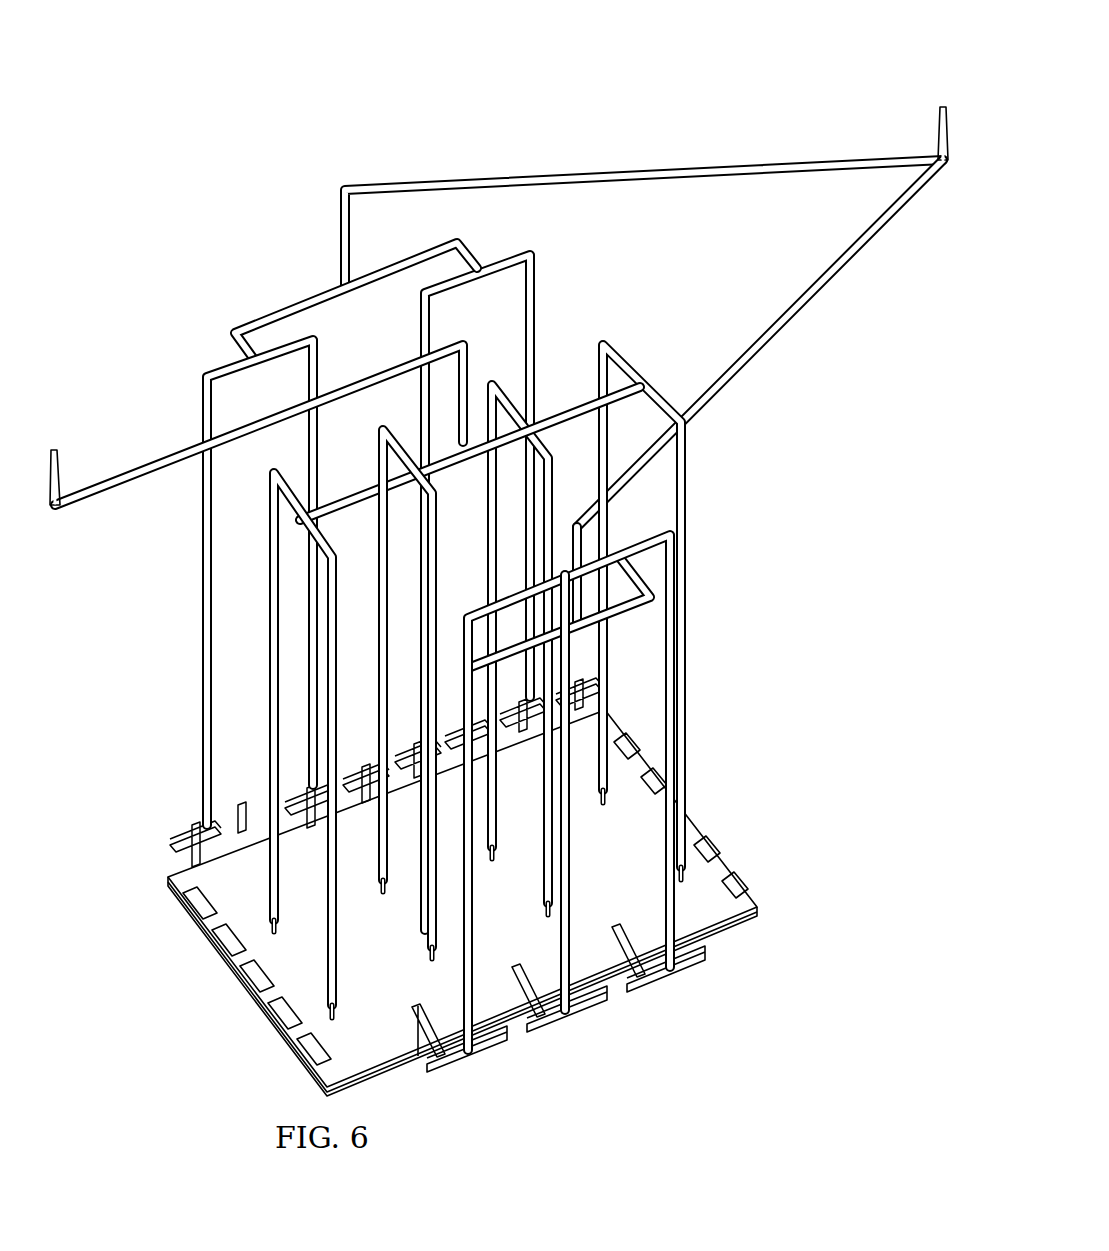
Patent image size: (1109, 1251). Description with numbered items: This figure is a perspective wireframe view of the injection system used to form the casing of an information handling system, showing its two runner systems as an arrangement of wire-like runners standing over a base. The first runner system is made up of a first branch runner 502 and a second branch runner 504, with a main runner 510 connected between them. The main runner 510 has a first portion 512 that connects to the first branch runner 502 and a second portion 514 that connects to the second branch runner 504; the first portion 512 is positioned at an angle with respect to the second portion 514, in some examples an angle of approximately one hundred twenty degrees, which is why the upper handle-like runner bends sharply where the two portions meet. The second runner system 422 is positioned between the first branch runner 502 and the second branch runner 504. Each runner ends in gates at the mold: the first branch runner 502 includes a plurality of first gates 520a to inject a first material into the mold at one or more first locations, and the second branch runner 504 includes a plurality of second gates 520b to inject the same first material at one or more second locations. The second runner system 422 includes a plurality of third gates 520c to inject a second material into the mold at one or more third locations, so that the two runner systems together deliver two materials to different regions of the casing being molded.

The second runner system 422 is at (84, 518).
The first branch runner 502 is at (280, 291).
The second branch runner 504 is at (720, 591).
The main runner 510 is at (933, 84).
The first portion 512 is at (633, 152).
The second portion 514 is at (804, 336).
The first gates 520a is at (298, 694).
The second gates 520b is at (577, 940).
The third gates 520c is at (250, 932).